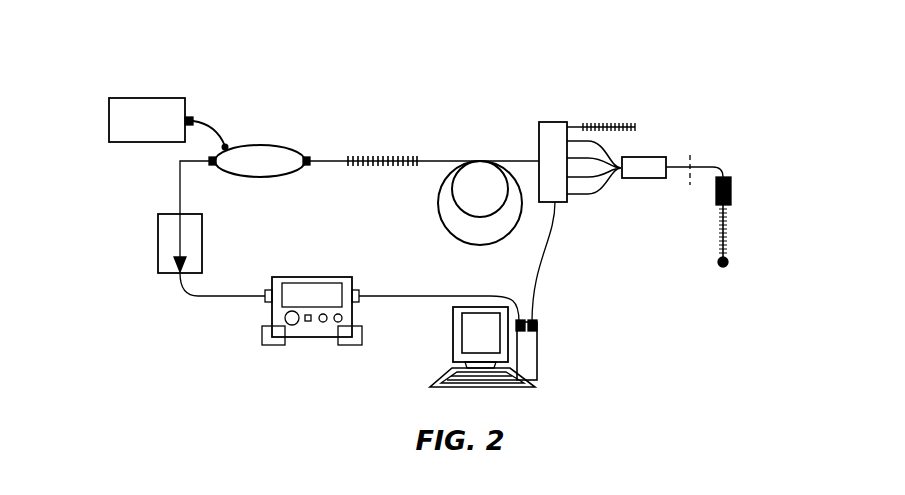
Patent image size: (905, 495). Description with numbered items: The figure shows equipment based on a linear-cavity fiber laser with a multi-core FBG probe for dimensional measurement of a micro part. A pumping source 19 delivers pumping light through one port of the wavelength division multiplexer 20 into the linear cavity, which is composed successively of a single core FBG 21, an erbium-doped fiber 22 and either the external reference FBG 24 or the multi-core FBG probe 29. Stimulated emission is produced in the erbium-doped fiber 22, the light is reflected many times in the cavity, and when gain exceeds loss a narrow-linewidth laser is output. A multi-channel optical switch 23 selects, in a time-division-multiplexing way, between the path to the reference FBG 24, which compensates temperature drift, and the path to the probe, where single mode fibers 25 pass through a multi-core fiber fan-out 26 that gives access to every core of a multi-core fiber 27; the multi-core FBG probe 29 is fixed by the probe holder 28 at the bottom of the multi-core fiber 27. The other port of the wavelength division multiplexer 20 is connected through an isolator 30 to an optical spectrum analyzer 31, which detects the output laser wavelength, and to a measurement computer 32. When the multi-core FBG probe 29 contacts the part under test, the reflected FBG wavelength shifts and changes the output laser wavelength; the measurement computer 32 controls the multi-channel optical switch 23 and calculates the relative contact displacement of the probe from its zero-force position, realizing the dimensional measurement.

The pumping source 19 is at (152, 97).
The wavelength division multiplexer 20 is at (255, 143).
The single core FBG 21 is at (388, 157).
The erbium-doped fiber 22 is at (478, 158).
The multi-channel optical switch 23 is at (546, 121).
The reference FBG 24 is at (585, 122).
The single mode fibers 25 is at (603, 148).
The multi-core fiber fan-out 26 is at (648, 156).
The multi-core fiber 27 is at (695, 153).
The probe holder 28 is at (732, 187).
The multi-core FBG probe 29 is at (728, 237).
The isolator 30 is at (202, 258).
The optical spectrum analyzer 31 is at (315, 277).
The measurement computer 32 is at (538, 345).